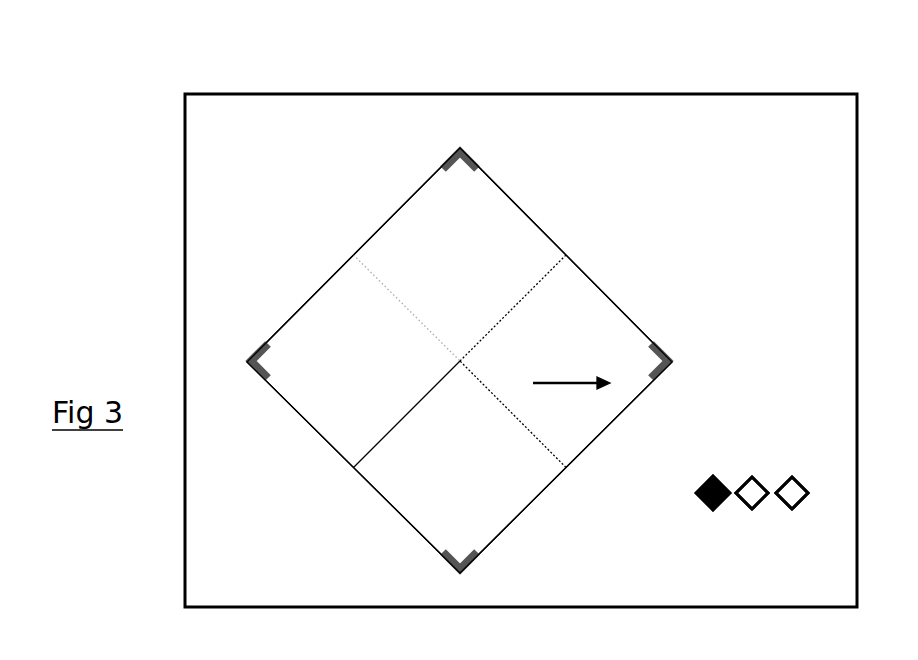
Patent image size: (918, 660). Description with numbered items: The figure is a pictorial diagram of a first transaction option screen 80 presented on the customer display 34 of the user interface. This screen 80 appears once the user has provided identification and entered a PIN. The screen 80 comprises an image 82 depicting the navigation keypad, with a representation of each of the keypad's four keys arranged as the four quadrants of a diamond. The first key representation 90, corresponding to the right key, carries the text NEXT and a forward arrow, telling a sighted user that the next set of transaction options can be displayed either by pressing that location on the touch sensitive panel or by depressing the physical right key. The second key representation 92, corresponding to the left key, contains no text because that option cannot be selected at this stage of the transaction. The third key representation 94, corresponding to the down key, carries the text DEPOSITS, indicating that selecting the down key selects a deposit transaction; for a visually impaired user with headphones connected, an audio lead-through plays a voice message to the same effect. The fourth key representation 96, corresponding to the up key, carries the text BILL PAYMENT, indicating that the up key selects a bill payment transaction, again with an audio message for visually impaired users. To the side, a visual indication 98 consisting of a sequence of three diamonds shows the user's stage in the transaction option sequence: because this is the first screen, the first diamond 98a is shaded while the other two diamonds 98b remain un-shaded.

The customer display 34 is at (727, 93).
The first transaction option screen 80 is at (783, 157).
The image 82 is at (312, 486).
The first key representation 90 is at (593, 303).
The second key representation 92 is at (310, 298).
The third key representation 94 is at (500, 512).
The fourth key representation 96 is at (520, 225).
The visual indication 98 is at (761, 441).
The first diamond 98a is at (697, 510).
The other diamonds 98b is at (740, 510).